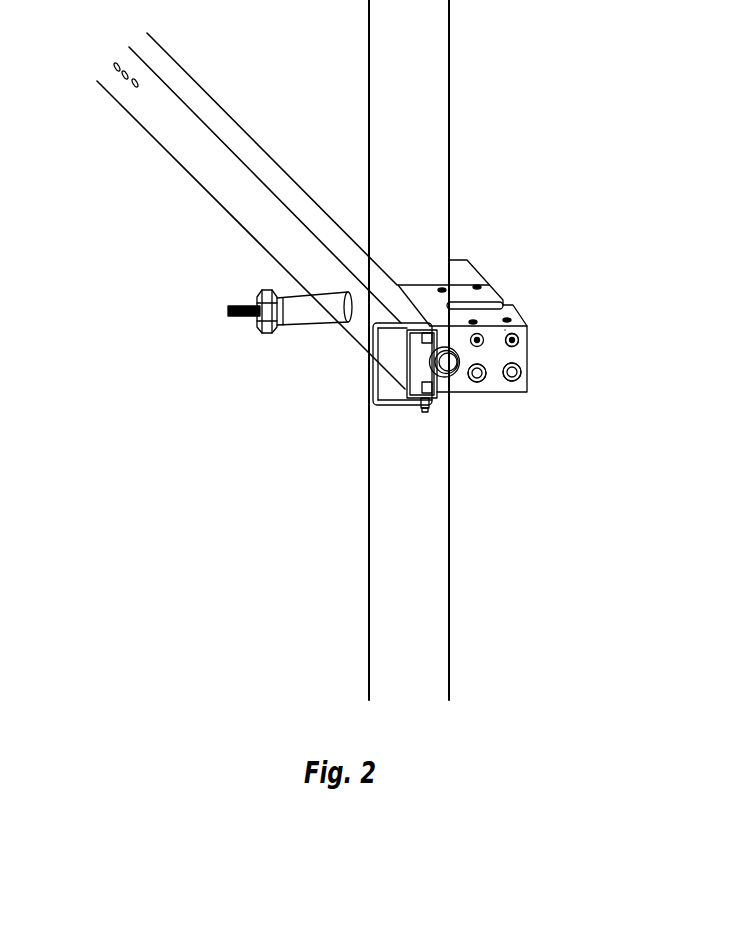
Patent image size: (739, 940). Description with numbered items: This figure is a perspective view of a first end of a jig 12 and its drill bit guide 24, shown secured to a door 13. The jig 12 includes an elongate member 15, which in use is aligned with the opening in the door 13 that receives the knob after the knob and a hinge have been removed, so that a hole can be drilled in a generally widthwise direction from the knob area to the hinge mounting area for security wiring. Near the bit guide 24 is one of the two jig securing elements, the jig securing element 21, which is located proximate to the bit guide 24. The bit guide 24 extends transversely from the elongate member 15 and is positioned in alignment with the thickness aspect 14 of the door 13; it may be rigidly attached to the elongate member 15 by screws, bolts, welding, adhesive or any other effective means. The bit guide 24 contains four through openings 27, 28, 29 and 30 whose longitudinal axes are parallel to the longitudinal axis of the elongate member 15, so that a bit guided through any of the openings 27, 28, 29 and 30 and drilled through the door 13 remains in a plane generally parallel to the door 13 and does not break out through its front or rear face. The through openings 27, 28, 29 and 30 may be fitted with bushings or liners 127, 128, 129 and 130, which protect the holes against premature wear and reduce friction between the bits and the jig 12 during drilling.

The jig 12 is at (165, 247).
The door 13 is at (318, 104).
The thickness aspect 14 is at (428, 211).
The elongate member 15 is at (197, 153).
The jig securing element 21 is at (264, 354).
The bit guide 24 is at (462, 288).
The through opening 27 is at (505, 330).
The through opening 28 is at (519, 370).
The through opening 29 is at (514, 336).
The through opening 30 is at (484, 377).
The bushing 127 is at (518, 343).
The bushing 128 is at (516, 378).
The bushing 129 is at (480, 336).
The bushing 130 is at (483, 380).